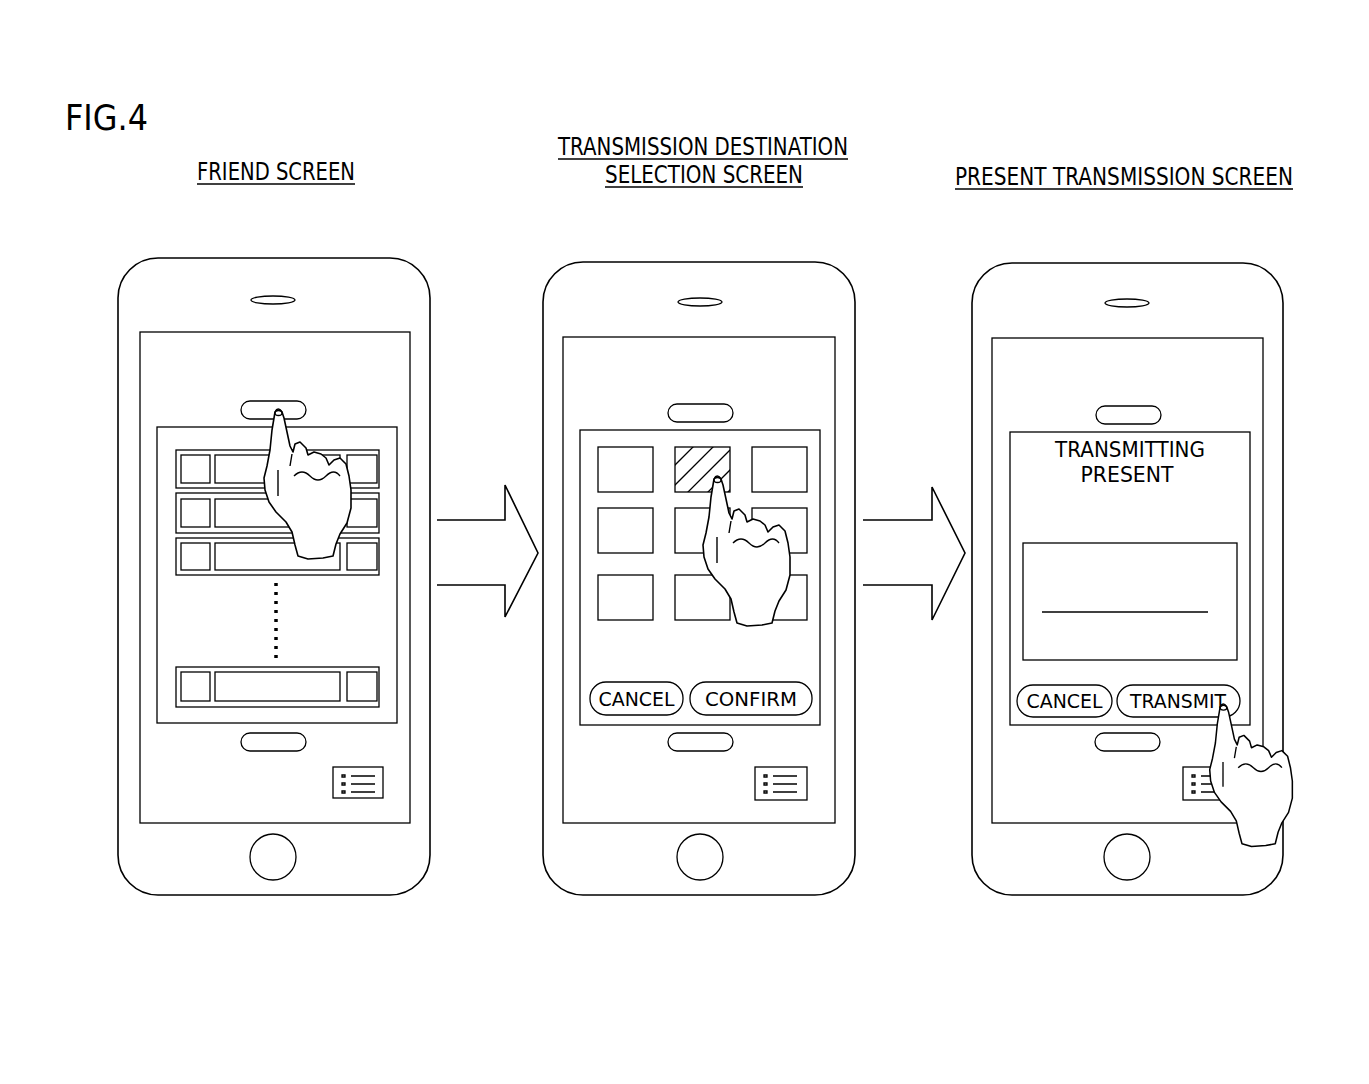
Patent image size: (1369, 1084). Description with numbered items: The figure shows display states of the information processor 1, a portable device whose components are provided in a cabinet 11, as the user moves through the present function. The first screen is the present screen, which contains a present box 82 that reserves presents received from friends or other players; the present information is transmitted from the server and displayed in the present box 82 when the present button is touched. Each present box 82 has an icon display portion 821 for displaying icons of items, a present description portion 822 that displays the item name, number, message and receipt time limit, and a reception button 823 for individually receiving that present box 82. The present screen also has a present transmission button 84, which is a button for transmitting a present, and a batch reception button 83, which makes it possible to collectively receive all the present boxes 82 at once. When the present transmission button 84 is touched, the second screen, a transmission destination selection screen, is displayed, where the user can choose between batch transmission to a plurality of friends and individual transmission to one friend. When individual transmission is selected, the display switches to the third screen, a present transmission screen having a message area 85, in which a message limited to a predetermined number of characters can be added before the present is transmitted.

The information processor 1 is at (434, 270).
The cabinet 11 is at (278, 258).
The present box 82 is at (322, 559).
The icon display portion 821 is at (198, 577).
The present description portion 822 is at (256, 574).
The reception button 823 is at (358, 577).
The batch reception button 83 is at (243, 742).
The present transmission button 84 is at (243, 410).
The message area 85 is at (1213, 543).